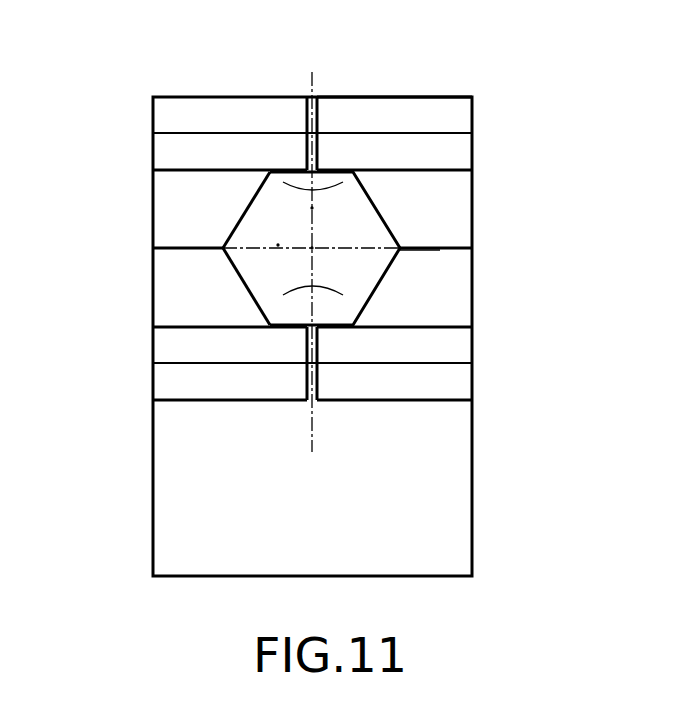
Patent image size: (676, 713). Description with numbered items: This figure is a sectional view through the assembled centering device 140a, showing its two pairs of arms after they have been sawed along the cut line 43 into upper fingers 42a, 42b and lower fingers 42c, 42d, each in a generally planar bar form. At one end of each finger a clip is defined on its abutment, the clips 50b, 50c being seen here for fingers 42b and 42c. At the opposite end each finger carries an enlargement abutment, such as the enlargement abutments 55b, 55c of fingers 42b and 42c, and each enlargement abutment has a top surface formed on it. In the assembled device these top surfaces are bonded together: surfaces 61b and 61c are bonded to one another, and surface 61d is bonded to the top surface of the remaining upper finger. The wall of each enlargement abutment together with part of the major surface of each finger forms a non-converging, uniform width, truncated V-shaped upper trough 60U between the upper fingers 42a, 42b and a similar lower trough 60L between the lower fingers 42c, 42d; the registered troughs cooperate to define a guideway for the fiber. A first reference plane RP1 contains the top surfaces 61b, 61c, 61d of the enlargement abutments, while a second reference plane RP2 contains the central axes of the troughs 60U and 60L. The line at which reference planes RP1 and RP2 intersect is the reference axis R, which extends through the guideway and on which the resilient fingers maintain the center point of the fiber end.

The centering device 140a is at (210, 64).
The cut line 43 is at (311, 250).
The finger 42a is at (183, 149).
The finger 42b is at (457, 157).
The finger 42c is at (455, 343).
The finger 42d is at (185, 348).
The enlargement abutment 55b is at (455, 114).
The enlargement abutment 55c is at (455, 380).
The clip 50b is at (447, 201).
The clip 50c is at (450, 300).
The upper trough 60U is at (273, 188).
The lower trough 60L is at (316, 287).
The top surface 61b is at (440, 248).
The top surface 61c is at (425, 249).
The top surface 61d is at (245, 253).
The reference plane RP1 is at (270, 240).
The reference plane RP2 is at (304, 207).
The reference axis R is at (312, 252).